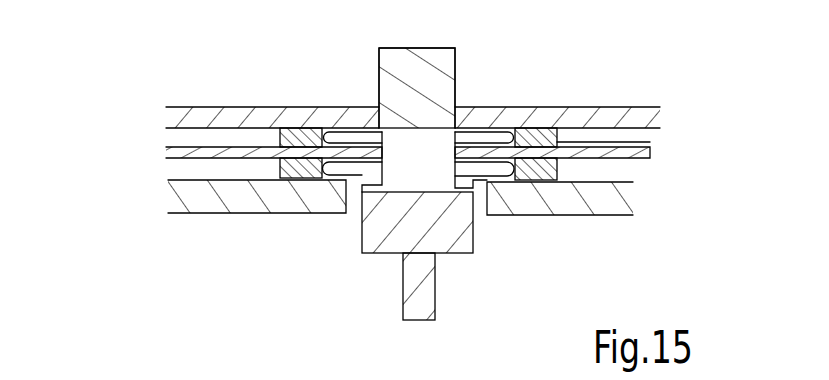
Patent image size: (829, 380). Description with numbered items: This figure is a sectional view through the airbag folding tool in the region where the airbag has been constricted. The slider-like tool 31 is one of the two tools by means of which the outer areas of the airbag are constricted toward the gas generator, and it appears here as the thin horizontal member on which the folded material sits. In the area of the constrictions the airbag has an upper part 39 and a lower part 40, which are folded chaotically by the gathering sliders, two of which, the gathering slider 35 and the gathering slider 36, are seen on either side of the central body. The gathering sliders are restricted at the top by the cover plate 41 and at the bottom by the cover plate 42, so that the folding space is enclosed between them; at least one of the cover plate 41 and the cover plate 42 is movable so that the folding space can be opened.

The slider-like tool 31 is at (180, 158).
The gathering slider 35 is at (280, 136).
The gathering slider 36 is at (557, 135).
The upper part 39 is at (352, 132).
The lower part 40 is at (350, 168).
The cover plate 41 is at (592, 120).
The cover plate 42 is at (238, 198).